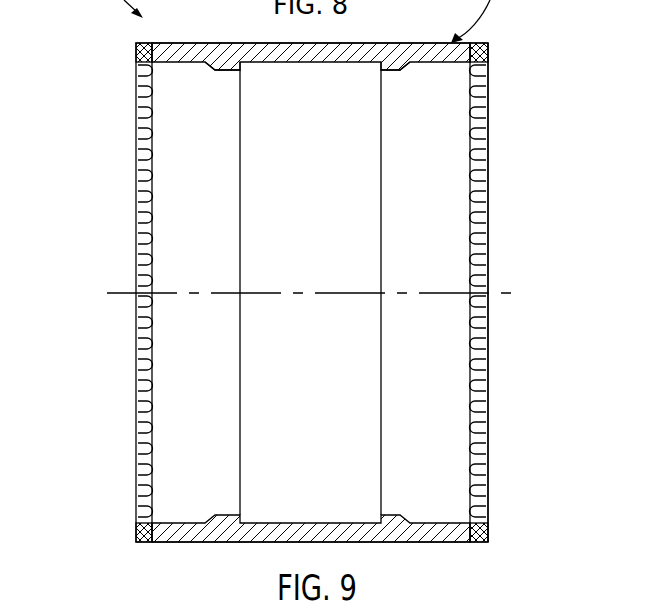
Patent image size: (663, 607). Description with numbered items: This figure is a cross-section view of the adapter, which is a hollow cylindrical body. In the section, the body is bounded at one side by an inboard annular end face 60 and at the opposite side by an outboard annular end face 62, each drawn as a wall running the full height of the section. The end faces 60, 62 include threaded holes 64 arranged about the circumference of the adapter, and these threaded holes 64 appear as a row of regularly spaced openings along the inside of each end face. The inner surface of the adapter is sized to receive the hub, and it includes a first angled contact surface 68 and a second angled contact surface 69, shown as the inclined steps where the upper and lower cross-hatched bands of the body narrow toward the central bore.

The inboard annular end face 60 is at (126, 96).
The outboard annular end face 62 is at (500, 112).
The threaded holes 64 is at (142, 258).
The first angled contact surface 68 is at (213, 62).
The second angled contact surface 69 is at (410, 70).